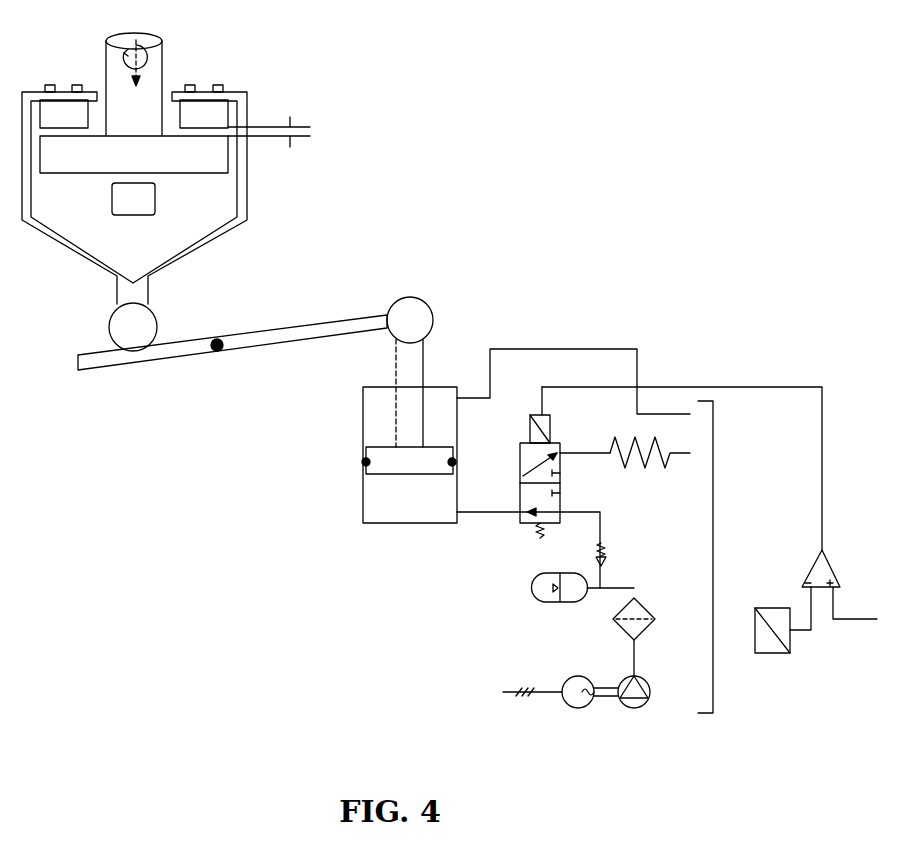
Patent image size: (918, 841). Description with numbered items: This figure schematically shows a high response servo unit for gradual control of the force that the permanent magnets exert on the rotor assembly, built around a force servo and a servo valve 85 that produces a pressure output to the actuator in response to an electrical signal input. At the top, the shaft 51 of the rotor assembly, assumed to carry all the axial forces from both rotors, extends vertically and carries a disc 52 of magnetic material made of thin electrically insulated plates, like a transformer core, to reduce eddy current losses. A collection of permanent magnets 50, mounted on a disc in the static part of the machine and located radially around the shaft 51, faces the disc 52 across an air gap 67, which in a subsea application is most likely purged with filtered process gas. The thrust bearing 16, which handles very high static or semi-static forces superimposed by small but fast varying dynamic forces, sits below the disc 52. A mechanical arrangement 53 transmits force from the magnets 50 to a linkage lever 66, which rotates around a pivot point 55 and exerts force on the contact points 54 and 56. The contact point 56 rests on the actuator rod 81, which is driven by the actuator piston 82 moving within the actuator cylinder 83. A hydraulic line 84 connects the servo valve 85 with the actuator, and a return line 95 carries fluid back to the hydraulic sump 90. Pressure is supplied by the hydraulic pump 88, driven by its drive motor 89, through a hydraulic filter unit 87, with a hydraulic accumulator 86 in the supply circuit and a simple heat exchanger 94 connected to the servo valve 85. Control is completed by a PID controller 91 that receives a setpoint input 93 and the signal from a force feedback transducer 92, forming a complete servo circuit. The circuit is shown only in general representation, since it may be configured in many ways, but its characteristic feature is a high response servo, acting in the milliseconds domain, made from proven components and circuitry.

The thrust bearing 16 is at (133, 199).
The permanent magnets 50 is at (134, 106).
The shaft 51 is at (134, 84).
The disc 52 is at (134, 154).
The mechanical arrangement 53 is at (241, 220).
The contact point 54 is at (141, 323).
The pivot point 55 is at (218, 339).
The contact point 56 is at (415, 312).
The linkage lever 66 is at (305, 332).
The air gap 67 is at (269, 143).
The actuator rod 81 is at (427, 393).
The actuator piston 82 is at (409, 460).
The actuator cylinder 83 is at (394, 455).
The hydraulic line 84 is at (531, 548).
The servo valve 85 is at (565, 462).
The hydraulic accumulator 86 is at (568, 587).
The hydraulic filter unit 87 is at (648, 636).
The hydraulic pump 88 is at (648, 692).
The drive motor 89 is at (560, 680).
The hydraulic sump 90 is at (682, 550).
The PID controller 91 is at (833, 590).
The force feedback transducer 92 is at (772, 644).
The setpoint input 93 is at (897, 618).
The heat exchanger 94 is at (650, 464).
The return line 95 is at (573, 370).